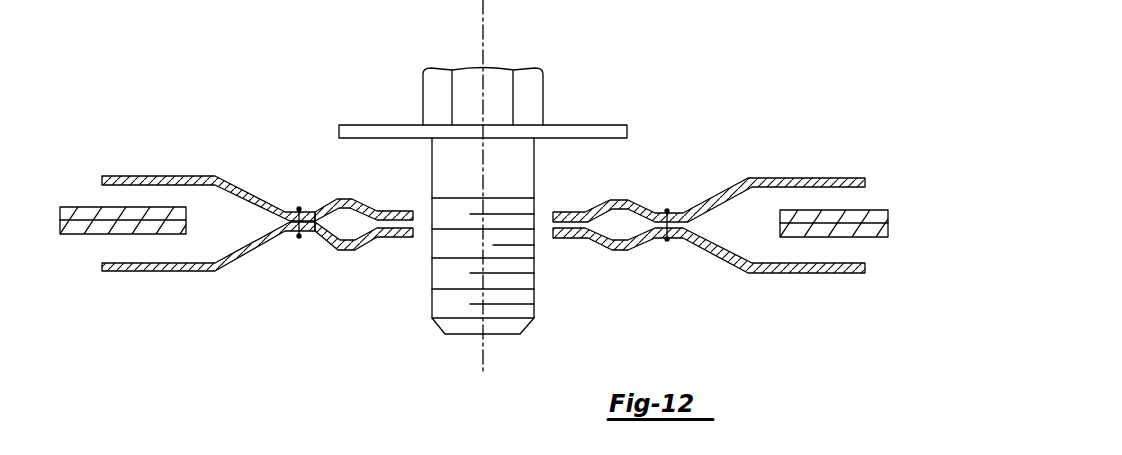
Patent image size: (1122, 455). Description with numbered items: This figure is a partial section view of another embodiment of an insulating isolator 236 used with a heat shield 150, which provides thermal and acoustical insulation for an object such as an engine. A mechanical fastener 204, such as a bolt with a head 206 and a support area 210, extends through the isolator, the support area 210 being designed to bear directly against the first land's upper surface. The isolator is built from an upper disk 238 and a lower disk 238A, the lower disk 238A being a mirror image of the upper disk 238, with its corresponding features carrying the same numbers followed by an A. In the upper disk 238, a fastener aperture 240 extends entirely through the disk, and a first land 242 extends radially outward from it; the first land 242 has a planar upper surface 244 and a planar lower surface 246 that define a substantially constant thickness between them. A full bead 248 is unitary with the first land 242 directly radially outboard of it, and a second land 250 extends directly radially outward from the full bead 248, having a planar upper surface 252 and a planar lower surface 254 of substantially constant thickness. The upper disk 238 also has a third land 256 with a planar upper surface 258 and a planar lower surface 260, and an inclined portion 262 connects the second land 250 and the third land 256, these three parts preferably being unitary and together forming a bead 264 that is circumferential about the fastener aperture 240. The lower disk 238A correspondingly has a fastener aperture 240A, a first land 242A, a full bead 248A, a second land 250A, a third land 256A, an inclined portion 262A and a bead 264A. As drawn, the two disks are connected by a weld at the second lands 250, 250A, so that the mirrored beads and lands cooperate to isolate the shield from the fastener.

The heat shield 150 is at (893, 208).
The mechanical fastener 204 is at (468, 67).
The head 206 is at (488, 170).
The support area 210 is at (563, 125).
The insulating isolator 236 is at (690, 146).
The upper disk 238 is at (715, 246).
The lower disk 238A is at (130, 272).
The fastener aperture 240 is at (353, 182).
The fastener aperture 240A is at (702, 255).
The first land 242 is at (372, 206).
The first land 242A is at (562, 240).
The planar upper surface 244 is at (350, 182).
The planar lower surface 246 is at (414, 226).
The full bead 248 is at (310, 208).
The full bead 248A is at (620, 251).
The second land 250 is at (259, 220).
The second land 250A is at (670, 240).
The planar upper surface 252 is at (259, 267).
The planar lower surface 254 is at (318, 236).
The third land 256 is at (196, 167).
The third land 256A is at (712, 295).
The planar upper surface 258 is at (196, 167).
The planar lower surface 260 is at (110, 192).
The inclined portion 262 is at (236, 188).
The inclined portion 262A is at (709, 295).
The bead 264 is at (275, 192).
The bead 264A is at (702, 270).